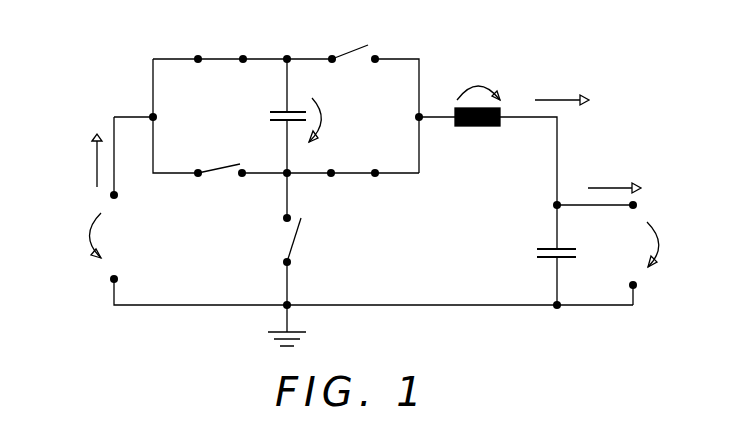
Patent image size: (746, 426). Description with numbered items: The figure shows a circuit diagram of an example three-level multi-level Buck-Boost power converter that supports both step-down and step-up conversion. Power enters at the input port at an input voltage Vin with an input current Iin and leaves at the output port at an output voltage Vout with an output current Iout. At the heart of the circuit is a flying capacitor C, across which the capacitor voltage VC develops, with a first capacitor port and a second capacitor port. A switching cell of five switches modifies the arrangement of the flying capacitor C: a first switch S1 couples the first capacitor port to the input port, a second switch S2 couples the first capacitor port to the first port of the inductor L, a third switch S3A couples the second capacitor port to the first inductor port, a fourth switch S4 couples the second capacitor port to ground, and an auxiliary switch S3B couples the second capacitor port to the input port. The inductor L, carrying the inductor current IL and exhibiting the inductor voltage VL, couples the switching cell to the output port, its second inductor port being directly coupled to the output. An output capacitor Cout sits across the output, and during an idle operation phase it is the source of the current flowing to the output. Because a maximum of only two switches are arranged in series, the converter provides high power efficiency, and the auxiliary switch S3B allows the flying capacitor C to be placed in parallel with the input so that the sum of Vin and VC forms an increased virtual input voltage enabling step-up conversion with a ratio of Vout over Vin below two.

The first switch S1 is at (220, 49).
The second switch S2 is at (353, 44).
The third switch S3A is at (353, 186).
The auxiliary switch S3B is at (220, 184).
The fourth switch S4 is at (280, 240).
The flying capacitor C is at (278, 118).
The flying capacitor voltage VC is at (328, 120).
The inductor L is at (477, 117).
The inductor voltage VL is at (478, 83).
The inductor current IL is at (562, 92).
The output current Iout is at (614, 179).
The output port voltage Vout is at (671, 244).
The output capacitor Cout is at (574, 266).
The input current Iin is at (81, 160).
The input port voltage Vin is at (74, 235).